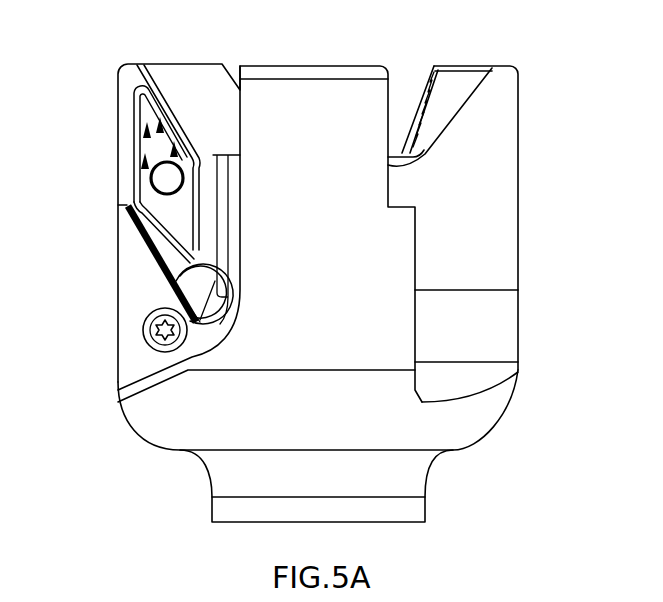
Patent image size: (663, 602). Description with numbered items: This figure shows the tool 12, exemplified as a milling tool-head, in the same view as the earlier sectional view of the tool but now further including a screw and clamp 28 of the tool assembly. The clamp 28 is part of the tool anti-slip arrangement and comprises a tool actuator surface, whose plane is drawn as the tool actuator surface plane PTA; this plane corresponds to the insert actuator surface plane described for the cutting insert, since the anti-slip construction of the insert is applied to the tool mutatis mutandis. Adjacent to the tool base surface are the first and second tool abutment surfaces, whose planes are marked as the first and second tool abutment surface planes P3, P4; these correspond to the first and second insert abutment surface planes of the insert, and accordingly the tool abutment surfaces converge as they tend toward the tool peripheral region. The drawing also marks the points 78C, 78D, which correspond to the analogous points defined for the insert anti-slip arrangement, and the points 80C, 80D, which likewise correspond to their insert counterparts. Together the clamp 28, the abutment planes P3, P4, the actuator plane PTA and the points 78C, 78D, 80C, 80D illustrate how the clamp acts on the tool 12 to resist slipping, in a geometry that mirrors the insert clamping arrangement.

The tool 12 is at (534, 54).
The point 80C is at (156, 128).
The point 80D is at (140, 148).
The point 78D is at (144, 166).
The point 78C is at (194, 160).
The clamp 28 is at (165, 302).
The second tool abutment surface plane P4 is at (200, 97).
The first tool abutment surface plane P3 is at (216, 121).
The tool actuator surface plane PTA is at (158, 277).